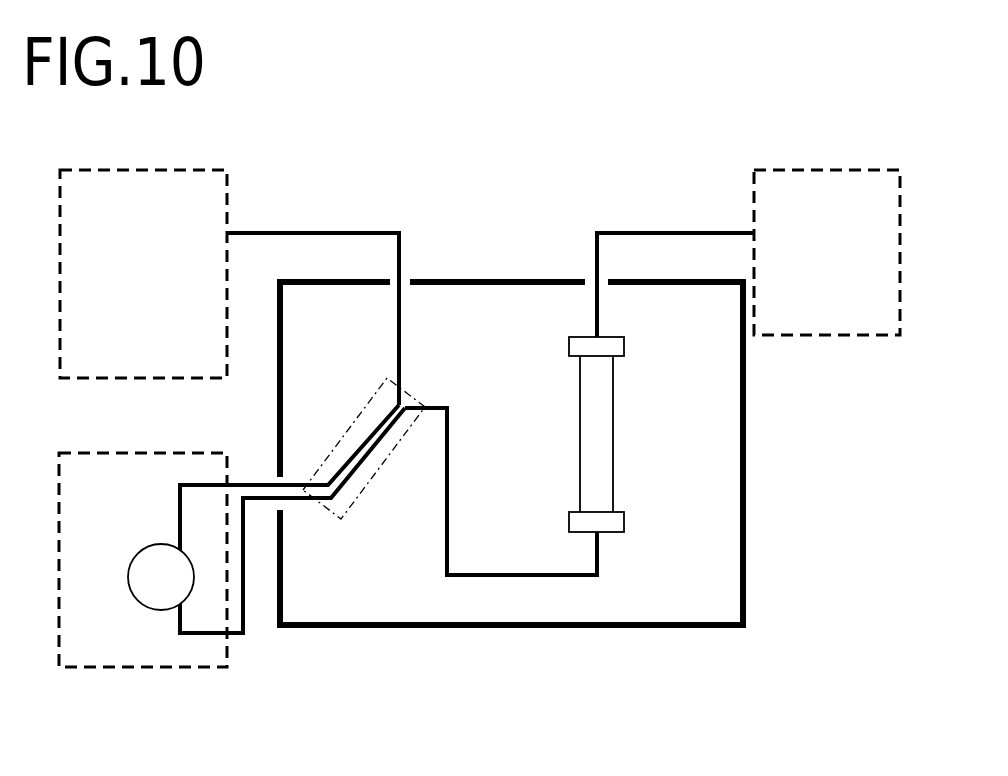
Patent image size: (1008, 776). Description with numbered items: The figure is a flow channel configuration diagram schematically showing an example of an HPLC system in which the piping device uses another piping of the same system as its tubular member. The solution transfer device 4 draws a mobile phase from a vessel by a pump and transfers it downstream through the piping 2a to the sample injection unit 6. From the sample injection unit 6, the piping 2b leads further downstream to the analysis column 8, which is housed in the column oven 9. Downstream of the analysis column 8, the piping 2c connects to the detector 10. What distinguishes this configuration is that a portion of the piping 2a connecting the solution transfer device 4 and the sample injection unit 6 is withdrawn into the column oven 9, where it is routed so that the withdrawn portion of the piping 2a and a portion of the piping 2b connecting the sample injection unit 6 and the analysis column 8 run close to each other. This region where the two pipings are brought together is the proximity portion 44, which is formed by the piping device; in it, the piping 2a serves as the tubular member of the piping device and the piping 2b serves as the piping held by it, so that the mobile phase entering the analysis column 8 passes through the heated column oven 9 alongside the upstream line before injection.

The piping 2a is at (317, 232).
The piping 2b is at (448, 503).
The piping 2c is at (648, 232).
The solution transfer device 4 is at (193, 168).
The sample injection unit 6 is at (160, 668).
The analysis column 8 is at (615, 458).
The column oven 9 is at (745, 485).
The detector 10 is at (827, 167).
The proximity portion 44 is at (367, 403).